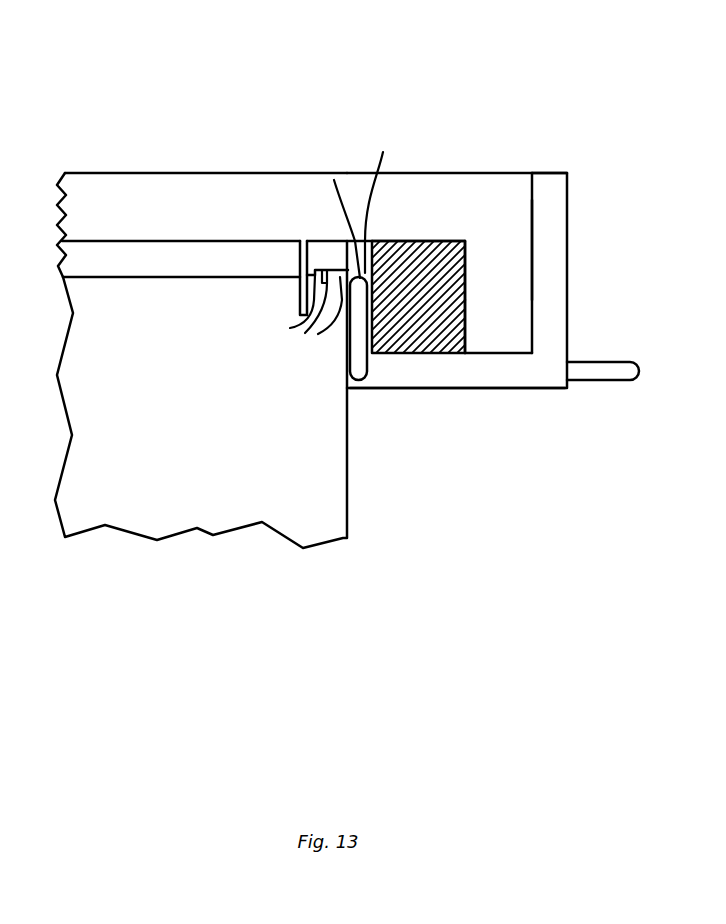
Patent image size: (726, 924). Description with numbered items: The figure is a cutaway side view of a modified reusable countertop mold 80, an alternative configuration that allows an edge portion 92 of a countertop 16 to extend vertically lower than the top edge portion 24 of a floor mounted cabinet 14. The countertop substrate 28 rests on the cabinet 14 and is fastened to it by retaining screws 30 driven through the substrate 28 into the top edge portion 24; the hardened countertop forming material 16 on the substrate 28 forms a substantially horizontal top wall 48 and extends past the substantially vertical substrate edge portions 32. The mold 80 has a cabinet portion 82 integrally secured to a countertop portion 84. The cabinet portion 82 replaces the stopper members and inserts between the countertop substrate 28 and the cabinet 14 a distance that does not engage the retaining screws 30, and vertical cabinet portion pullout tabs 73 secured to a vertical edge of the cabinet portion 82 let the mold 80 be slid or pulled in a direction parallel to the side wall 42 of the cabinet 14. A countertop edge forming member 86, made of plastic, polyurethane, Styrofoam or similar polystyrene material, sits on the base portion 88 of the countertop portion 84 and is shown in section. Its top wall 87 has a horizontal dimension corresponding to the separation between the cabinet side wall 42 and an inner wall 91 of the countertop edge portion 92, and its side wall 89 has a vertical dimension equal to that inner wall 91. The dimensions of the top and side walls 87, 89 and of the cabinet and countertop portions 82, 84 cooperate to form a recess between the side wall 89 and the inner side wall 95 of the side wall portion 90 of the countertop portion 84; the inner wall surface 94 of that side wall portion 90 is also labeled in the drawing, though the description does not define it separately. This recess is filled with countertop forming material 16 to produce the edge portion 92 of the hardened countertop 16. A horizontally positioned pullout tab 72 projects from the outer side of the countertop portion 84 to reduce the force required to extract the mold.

The modified reusable countertop mold 80 is at (653, 116).
The countertop 16 is at (195, 190).
The top wall 48 is at (142, 172).
The floor mounted cabinet 14 is at (187, 278).
The countertop substrate 28 is at (128, 258).
The retaining screws 30 is at (298, 260).
The top edge portion 24 is at (290, 328).
The side wall 42 is at (346, 352).
The cabinet portion 82 is at (346, 342).
The vertical cabinet portion pullout tabs 73 is at (334, 180).
The countertop substrate edge portions 32 is at (383, 152).
The countertop edge forming member 86 is at (417, 240).
The top wall 87 is at (442, 240).
The side wall 89 is at (463, 257).
The inner wall 91 is at (465, 298).
The countertop portion 84 is at (568, 307).
The base portion 88 is at (490, 373).
The countertop edge portion 92 is at (505, 328).
The side wall portion 90 is at (558, 223).
The wall surface 94 is at (532, 237).
The inner side wall 95 is at (543, 180).
The pullout tabs 72 is at (613, 382).